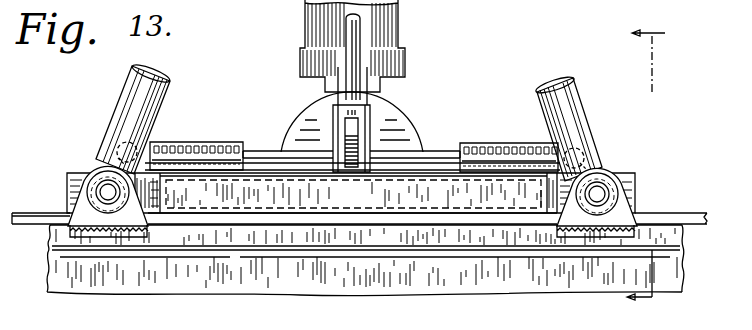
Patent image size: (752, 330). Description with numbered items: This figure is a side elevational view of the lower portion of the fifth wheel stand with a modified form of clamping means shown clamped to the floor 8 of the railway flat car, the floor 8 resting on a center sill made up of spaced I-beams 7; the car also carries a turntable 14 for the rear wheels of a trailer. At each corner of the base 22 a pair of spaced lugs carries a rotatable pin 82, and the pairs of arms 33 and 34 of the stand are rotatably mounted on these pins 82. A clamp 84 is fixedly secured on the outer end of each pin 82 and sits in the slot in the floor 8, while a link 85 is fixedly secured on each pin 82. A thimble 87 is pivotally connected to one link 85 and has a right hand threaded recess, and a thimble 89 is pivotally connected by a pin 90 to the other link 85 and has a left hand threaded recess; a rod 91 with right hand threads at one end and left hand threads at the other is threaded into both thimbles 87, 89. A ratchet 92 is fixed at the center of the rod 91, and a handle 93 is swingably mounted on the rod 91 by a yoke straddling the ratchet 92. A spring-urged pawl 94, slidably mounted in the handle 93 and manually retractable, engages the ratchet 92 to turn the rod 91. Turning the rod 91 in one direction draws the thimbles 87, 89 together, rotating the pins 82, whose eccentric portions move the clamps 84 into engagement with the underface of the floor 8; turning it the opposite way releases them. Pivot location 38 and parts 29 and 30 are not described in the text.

The I-beams 7 is at (62, 265).
The floor 8 is at (695, 216).
The turntable 14 is at (668, 29).
The base 22 is at (302, 200).
The knob 29 is at (318, 14).
The dome housing 30 is at (388, 118).
The arms 33 is at (138, 86).
The arms 34 is at (572, 106).
The pivot 38 is at (587, 157).
The pin 82 is at (110, 192).
The clamp 84 is at (137, 222).
The link 85 is at (112, 160).
The thimble 87 is at (492, 146).
The thimble 89 is at (205, 143).
The pin 90 is at (115, 140).
The rod 91 is at (262, 152).
The ratchet 92 is at (347, 165).
The handle 93 is at (357, 36).
The pawl 94 is at (350, 122).